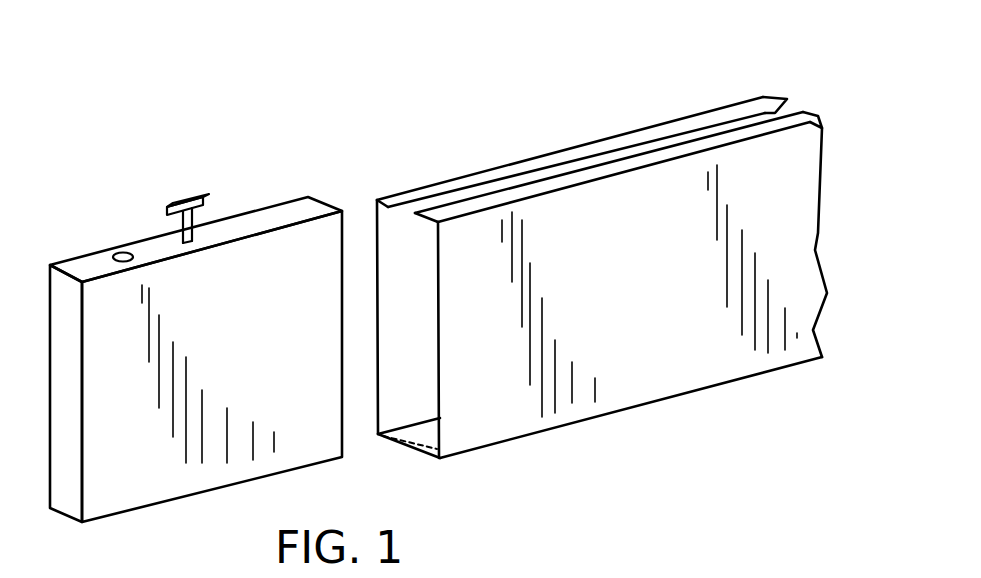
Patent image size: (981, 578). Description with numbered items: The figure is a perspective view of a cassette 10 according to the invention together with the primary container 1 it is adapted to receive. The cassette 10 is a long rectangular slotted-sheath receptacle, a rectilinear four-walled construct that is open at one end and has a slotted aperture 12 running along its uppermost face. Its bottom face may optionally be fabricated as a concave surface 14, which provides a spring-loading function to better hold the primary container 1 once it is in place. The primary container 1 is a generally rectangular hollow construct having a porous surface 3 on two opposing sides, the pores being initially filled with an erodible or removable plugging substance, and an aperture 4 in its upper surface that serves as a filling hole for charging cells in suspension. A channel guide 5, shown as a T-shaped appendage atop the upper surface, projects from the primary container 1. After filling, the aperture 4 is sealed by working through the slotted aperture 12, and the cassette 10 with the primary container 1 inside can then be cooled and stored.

The primary container 1 is at (252, 177).
The porous surface 3 is at (103, 349).
The aperture 4 is at (115, 253).
The channel guide 5 is at (175, 203).
The cassette 10 is at (688, 94).
The slotted aperture 12 is at (587, 162).
The concave surface 14 is at (410, 436).